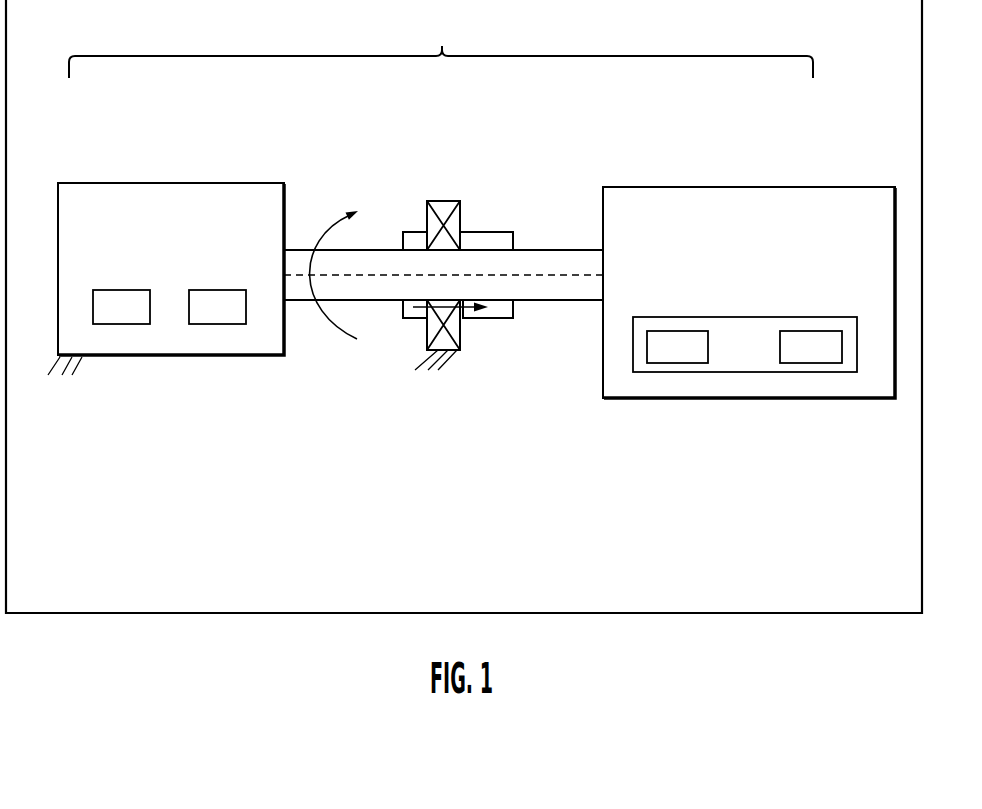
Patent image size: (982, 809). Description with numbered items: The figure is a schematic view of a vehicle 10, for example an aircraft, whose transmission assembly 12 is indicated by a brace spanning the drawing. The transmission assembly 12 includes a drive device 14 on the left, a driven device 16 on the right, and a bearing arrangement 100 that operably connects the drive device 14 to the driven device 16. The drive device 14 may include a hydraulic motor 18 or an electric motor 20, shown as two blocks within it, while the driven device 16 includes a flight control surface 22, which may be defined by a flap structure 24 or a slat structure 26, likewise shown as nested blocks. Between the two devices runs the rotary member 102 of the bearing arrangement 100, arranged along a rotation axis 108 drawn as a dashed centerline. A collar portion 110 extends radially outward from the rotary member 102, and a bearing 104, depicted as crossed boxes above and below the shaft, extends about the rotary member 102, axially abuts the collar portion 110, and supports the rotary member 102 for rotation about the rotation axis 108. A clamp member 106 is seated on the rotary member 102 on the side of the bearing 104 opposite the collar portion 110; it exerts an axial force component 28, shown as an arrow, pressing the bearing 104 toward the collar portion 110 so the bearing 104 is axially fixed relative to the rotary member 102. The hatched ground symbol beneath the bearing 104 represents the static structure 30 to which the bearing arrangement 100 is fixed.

The vehicle 10 is at (92, 614).
The transmission assembly 12 is at (441, 44).
The drive device 14 is at (265, 357).
The driven device 16 is at (782, 402).
The hydraulic motor 18 is at (139, 325).
The electric motor 20 is at (205, 325).
The flight control surface 22 is at (650, 372).
The flap structure 24 is at (700, 363).
The slat structure 26 is at (805, 363).
The axial force component 28 is at (467, 310).
The static structure 30 is at (450, 355).
The bearing arrangement 100 is at (382, 394).
The rotary member 102 is at (542, 265).
The bearing 104 is at (440, 200).
The clamp member 106 is at (416, 232).
The rotation axis 108 is at (573, 278).
The collar portion 110 is at (488, 235).